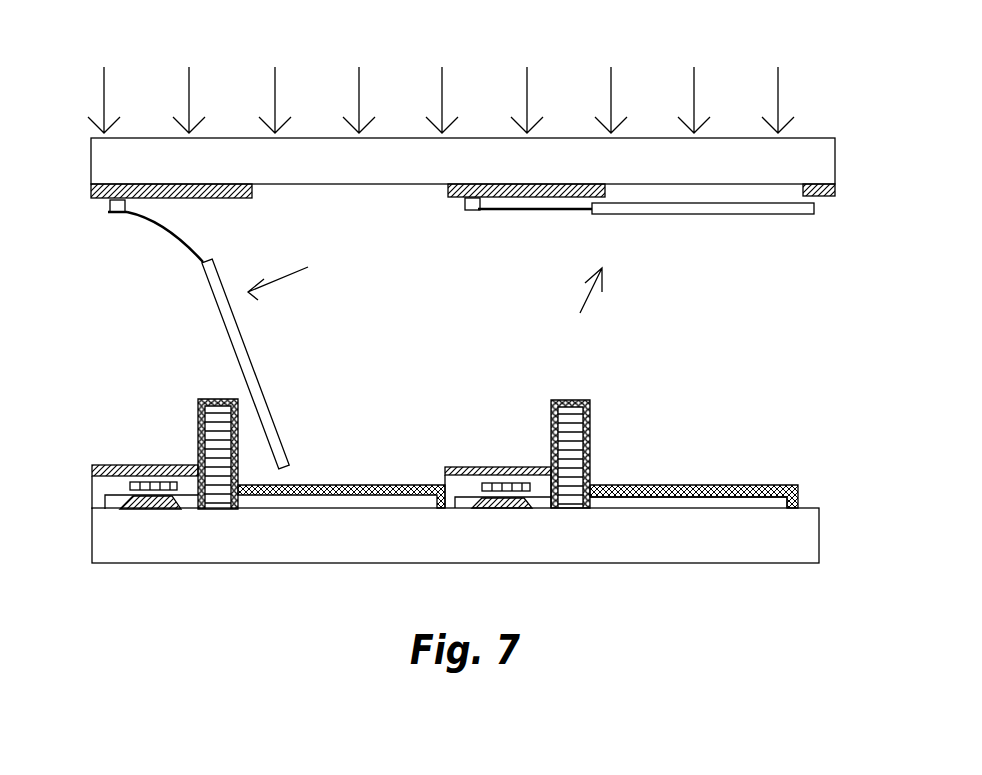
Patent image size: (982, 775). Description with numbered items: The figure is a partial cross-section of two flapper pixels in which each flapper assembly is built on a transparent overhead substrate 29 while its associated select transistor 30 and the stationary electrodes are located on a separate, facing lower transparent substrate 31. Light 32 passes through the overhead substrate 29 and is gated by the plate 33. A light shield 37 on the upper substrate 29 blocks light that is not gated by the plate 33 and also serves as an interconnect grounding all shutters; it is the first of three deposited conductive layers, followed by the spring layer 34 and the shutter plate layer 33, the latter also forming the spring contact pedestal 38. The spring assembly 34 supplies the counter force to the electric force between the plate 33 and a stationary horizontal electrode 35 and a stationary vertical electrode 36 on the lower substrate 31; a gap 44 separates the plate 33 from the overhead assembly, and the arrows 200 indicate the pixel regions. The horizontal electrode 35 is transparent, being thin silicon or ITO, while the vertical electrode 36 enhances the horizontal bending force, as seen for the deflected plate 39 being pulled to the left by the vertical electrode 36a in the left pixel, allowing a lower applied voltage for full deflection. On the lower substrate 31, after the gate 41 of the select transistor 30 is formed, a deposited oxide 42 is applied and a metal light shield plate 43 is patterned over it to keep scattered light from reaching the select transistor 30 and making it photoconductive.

The overhead substrate 29 is at (798, 164).
The light 32 is at (442, 98).
The light shield 37 is at (570, 187).
The spring contact pedestal 38 is at (463, 202).
The spring assembly 34 is at (568, 212).
The gap 44 is at (647, 192).
The plate 33 is at (716, 215).
The light valve cell 200 is at (425, 294).
The deflected plate 39 is at (265, 402).
The vertical electrode 36a is at (198, 442).
The stationary vertical electrode 36 is at (590, 437).
The stationary horizontal electrode 35 is at (717, 502).
The deposited oxide 42 is at (450, 481).
The metal light shield plate 43 is at (468, 467).
The gate 41 is at (503, 483).
The select transistor 30 is at (502, 497).
The lower transparent substrate 31 is at (676, 533).